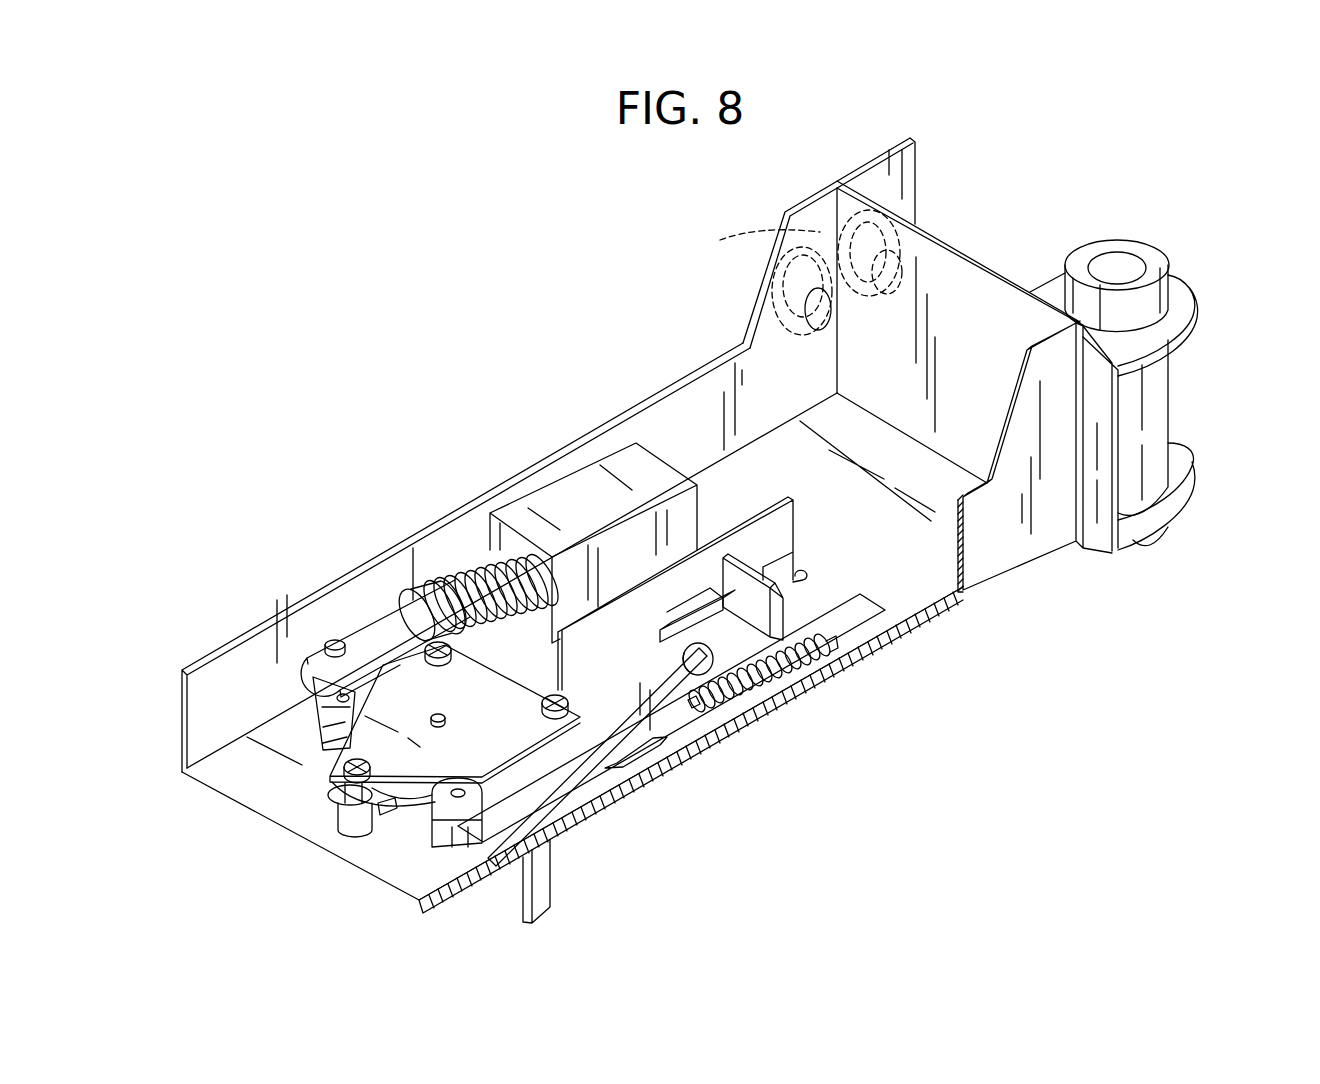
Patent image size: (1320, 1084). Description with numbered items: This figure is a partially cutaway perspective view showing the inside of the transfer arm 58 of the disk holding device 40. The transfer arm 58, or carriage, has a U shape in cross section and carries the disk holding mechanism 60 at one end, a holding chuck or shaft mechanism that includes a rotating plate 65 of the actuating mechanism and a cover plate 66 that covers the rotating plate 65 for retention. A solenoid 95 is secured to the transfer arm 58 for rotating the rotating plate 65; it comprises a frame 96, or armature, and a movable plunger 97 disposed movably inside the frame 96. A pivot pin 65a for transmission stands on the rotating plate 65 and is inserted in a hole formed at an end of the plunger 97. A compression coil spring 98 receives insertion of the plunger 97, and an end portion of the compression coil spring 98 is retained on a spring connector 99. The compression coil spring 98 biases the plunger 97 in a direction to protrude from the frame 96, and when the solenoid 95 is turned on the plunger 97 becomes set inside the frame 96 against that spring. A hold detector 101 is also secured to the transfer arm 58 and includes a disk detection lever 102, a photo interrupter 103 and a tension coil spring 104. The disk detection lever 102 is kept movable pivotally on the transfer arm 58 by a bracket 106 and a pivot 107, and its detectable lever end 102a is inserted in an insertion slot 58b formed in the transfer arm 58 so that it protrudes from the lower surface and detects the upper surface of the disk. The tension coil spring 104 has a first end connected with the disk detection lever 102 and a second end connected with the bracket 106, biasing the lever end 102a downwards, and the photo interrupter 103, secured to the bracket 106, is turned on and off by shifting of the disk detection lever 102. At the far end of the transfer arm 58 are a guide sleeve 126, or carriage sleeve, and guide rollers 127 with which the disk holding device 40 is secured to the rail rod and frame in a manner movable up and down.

The disk holding device 40 is at (631, 545).
The transfer arm 58 is at (374, 852).
The insertion slot 58b is at (498, 833).
The disk holding mechanism 60 is at (367, 699).
The rotating plate 65 is at (312, 682).
The pivot pin 65a is at (337, 640).
The cover plate 66 is at (470, 670).
The solenoid 95 is at (499, 529).
The frame 96 is at (573, 470).
The plunger 97 is at (373, 630).
The compression coil spring 98 is at (455, 572).
The spring connector 99 is at (417, 590).
The hold detector 101 is at (678, 741).
The disk detection lever 102 is at (671, 761).
The detectable lever end 102a is at (540, 908).
The photo interrupter 103 is at (782, 610).
The tension coil spring 104 is at (808, 675).
The bracket 106 is at (736, 545).
The pivot 107 is at (683, 662).
The guide sleeve 126 is at (1155, 402).
The guide rollers 127 is at (752, 275).